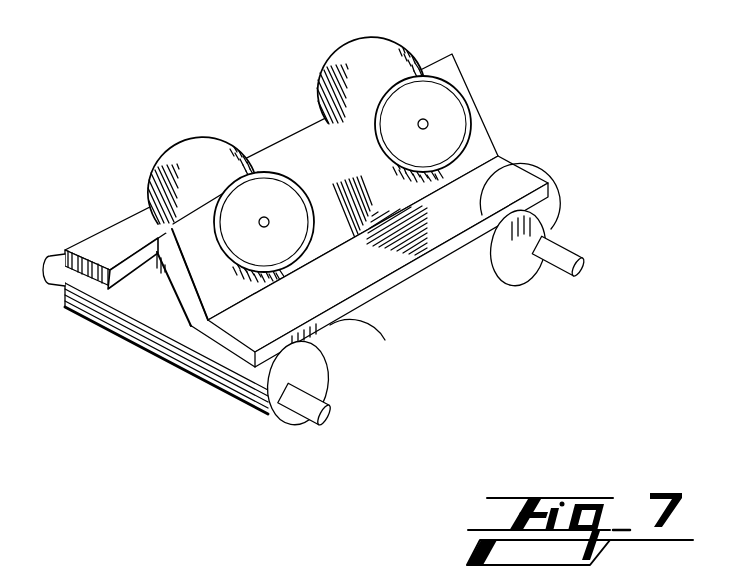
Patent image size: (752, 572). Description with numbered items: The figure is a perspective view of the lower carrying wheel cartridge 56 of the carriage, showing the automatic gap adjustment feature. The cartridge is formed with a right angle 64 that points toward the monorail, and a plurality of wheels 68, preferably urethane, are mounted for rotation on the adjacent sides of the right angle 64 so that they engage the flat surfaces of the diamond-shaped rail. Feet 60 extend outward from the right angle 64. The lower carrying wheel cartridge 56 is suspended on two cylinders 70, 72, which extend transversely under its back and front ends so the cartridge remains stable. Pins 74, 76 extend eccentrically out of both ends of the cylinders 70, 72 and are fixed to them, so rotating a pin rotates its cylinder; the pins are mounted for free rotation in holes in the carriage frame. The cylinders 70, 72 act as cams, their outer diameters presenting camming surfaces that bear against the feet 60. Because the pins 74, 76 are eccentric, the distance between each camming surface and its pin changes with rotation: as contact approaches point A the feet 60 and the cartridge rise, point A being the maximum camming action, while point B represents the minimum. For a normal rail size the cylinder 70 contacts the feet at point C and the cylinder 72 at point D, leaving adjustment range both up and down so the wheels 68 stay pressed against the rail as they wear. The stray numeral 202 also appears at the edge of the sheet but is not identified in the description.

The carriage assembly 56 is at (497, 70).
The guide block 60 is at (97, 245).
The V-shaped guide plate 64 is at (95, 247).
The roller 68 is at (190, 148).
The laminated base plate 70 is at (130, 330).
The rail 72 is at (454, 262).
The front pin 74 is at (290, 425).
The side pin 76 is at (572, 243).
The axis A is at (362, 326).
The axis B is at (278, 430).
The axis C is at (330, 373).
The axis D is at (555, 232).
The adjacent figure element 202 is at (8, 571).